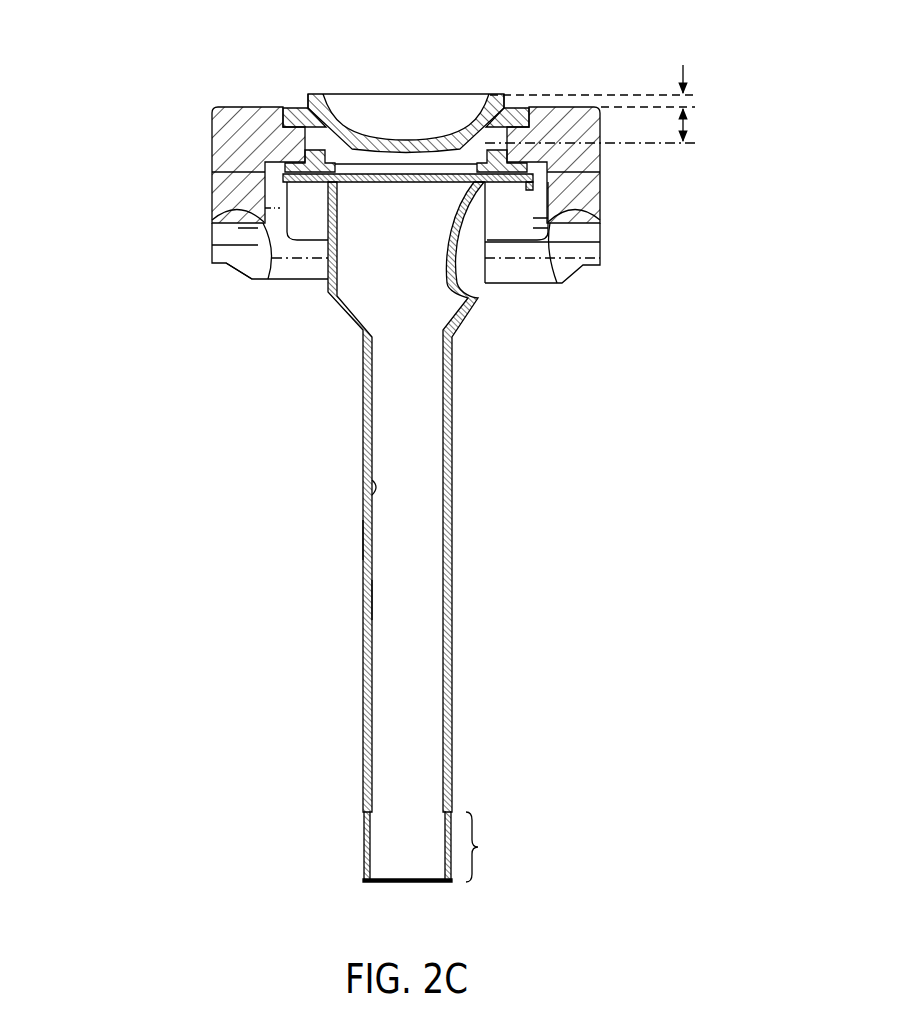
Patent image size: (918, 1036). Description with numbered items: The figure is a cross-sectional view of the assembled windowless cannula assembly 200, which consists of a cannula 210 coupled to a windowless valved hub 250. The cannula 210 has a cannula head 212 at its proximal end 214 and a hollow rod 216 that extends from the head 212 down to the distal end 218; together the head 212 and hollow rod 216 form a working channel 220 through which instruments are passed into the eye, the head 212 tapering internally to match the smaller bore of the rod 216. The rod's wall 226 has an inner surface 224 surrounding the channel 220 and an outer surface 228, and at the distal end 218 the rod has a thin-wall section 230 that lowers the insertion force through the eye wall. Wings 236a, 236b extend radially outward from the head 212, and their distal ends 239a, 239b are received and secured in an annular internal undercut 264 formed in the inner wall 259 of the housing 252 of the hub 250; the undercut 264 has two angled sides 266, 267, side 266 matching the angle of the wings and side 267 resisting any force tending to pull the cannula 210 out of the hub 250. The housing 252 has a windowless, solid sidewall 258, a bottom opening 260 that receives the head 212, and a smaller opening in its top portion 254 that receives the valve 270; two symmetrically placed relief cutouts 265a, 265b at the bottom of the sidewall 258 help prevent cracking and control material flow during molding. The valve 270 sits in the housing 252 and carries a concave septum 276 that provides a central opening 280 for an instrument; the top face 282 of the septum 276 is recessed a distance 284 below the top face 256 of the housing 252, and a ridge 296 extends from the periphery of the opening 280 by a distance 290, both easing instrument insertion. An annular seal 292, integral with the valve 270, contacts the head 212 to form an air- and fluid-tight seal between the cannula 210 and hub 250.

The windowless cannula assembly 200 is at (155, 52).
The cannula 210 is at (350, 446).
The cannula head 212 is at (484, 290).
The proximal end 214 is at (456, 340).
The hollow rod 216 is at (457, 660).
The distal end 218 is at (365, 848).
The working channel 220 is at (428, 537).
The inner surface 224 is at (370, 486).
The wall 226 is at (364, 600).
The outer surface 228 is at (366, 540).
The thin-wall section 230 is at (443, 847).
The wing 236a is at (305, 240).
The wing 236b is at (555, 260).
The distal end of wing 239a is at (315, 240).
The distal end of wing 239b is at (490, 238).
The windowless valved hub 250 is at (210, 126).
The housing 252 is at (601, 95).
The top portion 254 is at (240, 120).
The top face 256 is at (285, 107).
The sidewall 258 is at (601, 150).
The inner wall 259 is at (590, 197).
The bottom opening 260 is at (316, 292).
The internal undercut 264 is at (262, 232).
The relief cutout 265a is at (575, 252).
The relief cutout 265b is at (250, 282).
The side of undercut 266 is at (258, 212).
The side of undercut 267 is at (235, 266).
The valve 270 is at (440, 88).
The septum 276 is at (415, 184).
The opening 280 is at (410, 140).
The top face of septum 282 is at (350, 108).
The distance 284 is at (690, 125).
The distance 290 is at (690, 95).
The annular seal 292 is at (285, 168).
The ridge 296 is at (500, 106).